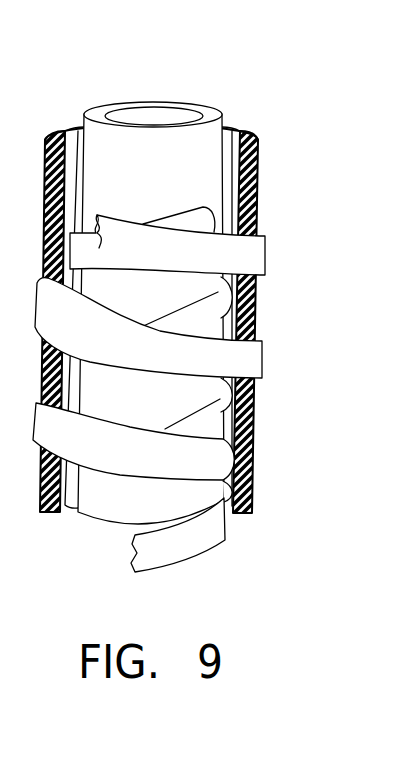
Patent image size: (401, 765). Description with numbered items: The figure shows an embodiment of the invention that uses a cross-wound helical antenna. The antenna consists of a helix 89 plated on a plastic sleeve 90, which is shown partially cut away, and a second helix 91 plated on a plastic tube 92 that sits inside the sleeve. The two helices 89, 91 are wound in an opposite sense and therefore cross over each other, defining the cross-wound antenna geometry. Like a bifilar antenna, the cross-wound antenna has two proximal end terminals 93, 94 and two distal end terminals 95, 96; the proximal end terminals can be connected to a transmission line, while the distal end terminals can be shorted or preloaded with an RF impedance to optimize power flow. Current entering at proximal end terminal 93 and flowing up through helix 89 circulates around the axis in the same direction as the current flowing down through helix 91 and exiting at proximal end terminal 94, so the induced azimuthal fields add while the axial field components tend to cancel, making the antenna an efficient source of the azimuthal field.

The helix 89 is at (238, 360).
The plastic sleeve 90 is at (243, 131).
The helix 91 is at (200, 322).
The plastic tube 92 is at (210, 113).
The proximal end terminal 93 is at (203, 463).
The proximal end terminal 94 is at (141, 557).
The distal end terminal 95 is at (126, 234).
The distal end terminal 96 is at (198, 223).